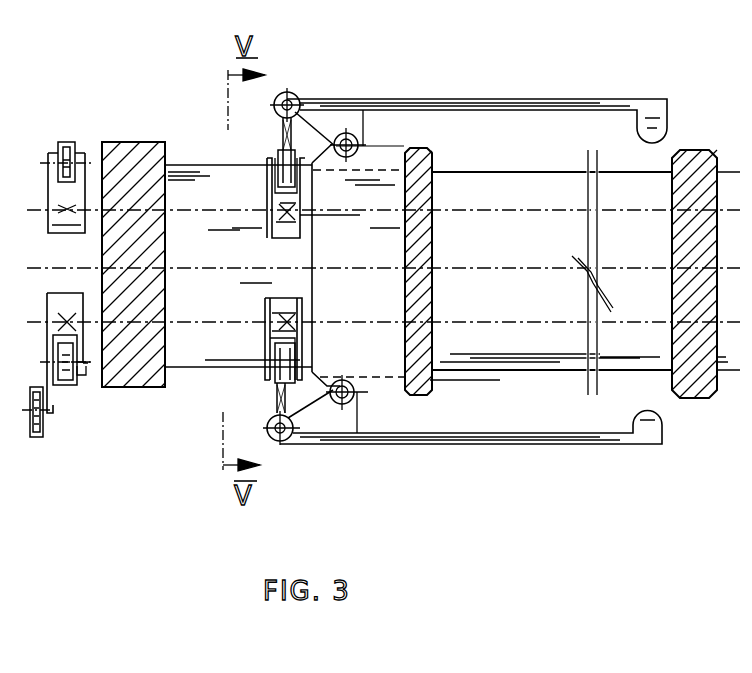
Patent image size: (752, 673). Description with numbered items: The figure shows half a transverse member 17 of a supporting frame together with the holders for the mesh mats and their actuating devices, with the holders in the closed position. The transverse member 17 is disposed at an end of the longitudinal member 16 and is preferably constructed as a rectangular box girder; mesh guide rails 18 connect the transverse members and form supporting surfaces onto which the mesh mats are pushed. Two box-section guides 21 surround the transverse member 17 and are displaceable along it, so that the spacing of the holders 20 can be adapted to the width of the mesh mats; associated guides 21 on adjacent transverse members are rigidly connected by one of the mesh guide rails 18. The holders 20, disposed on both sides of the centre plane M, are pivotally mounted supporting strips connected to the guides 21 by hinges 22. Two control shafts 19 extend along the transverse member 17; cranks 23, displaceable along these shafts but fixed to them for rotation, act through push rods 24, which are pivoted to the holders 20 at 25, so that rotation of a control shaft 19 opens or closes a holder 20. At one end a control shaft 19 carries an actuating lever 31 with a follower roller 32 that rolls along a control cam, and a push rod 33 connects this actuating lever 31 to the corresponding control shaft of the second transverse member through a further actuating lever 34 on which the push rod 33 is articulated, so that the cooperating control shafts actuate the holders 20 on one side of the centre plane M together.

The longitudinal member 16 is at (146, 141).
The transverse member 17 is at (526, 371).
The mesh guide rail 18 is at (426, 232).
The control shaft 19 is at (533, 322).
The holder 20 is at (466, 99).
The guide 21 is at (335, 257).
The hinge 22 is at (359, 142).
The crank 23 is at (275, 190).
The push rod 24 is at (283, 136).
The pivot 25 is at (292, 94).
The actuating lever 31 is at (72, 297).
The follower roller 32 is at (38, 437).
The push rod 33 is at (70, 146).
The actuating lever 34 is at (68, 227).
The centre plane M is at (199, 268).